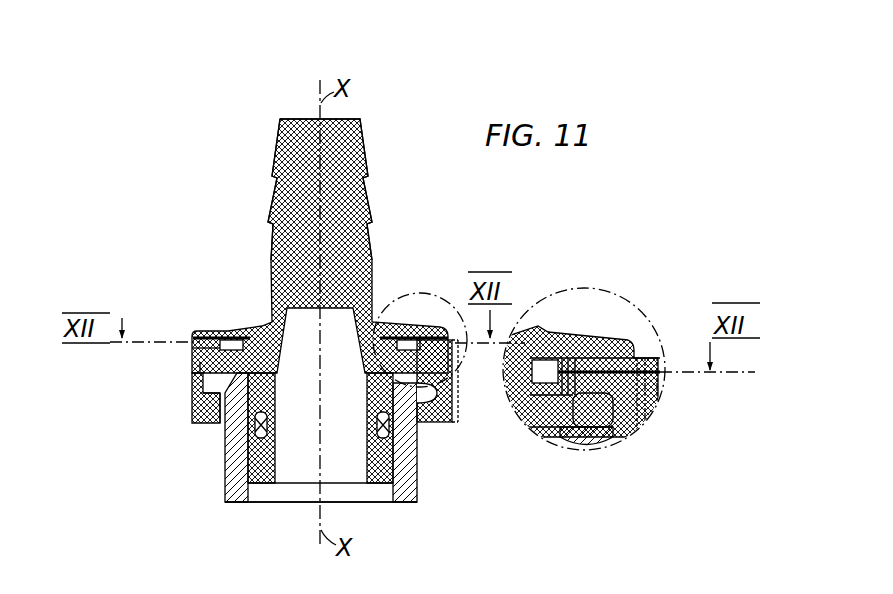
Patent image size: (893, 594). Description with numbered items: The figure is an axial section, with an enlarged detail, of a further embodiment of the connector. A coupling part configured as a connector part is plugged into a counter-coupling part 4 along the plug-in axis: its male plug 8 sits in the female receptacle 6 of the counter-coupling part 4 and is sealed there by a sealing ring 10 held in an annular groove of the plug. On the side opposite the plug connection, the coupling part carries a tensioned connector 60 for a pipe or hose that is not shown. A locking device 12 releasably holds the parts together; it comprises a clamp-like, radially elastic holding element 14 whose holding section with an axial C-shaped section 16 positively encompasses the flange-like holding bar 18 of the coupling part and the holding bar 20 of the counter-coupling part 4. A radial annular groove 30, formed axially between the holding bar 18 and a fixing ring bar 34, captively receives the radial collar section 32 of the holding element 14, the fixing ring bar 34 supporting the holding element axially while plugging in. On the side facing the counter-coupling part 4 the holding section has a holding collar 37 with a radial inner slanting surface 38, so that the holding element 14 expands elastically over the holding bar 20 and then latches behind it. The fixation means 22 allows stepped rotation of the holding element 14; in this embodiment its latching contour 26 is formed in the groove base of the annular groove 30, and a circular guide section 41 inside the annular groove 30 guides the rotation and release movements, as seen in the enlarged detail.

The counter-coupling part 4 is at (214, 490).
The female receptacle 6 is at (388, 503).
The male plug 8 is at (389, 463).
The sealing ring 10 is at (227, 447).
The locking device 12 is at (188, 383).
The holding element 14 is at (452, 412).
The C-shaped section 16 is at (633, 424).
The holding bar 18 is at (575, 392).
The holding bar 20 is at (589, 441).
The fixation means 22 is at (553, 390).
The latching contour 26 is at (549, 362).
The annular groove 30 is at (393, 345).
The collar section 32 is at (226, 342).
The fixing ring bar 34 is at (212, 335).
The holding collar 37 is at (205, 410).
The inner slanting surface 38 is at (213, 426).
The circular guide section 41 is at (573, 388).
The tensioned connector 60 is at (365, 170).